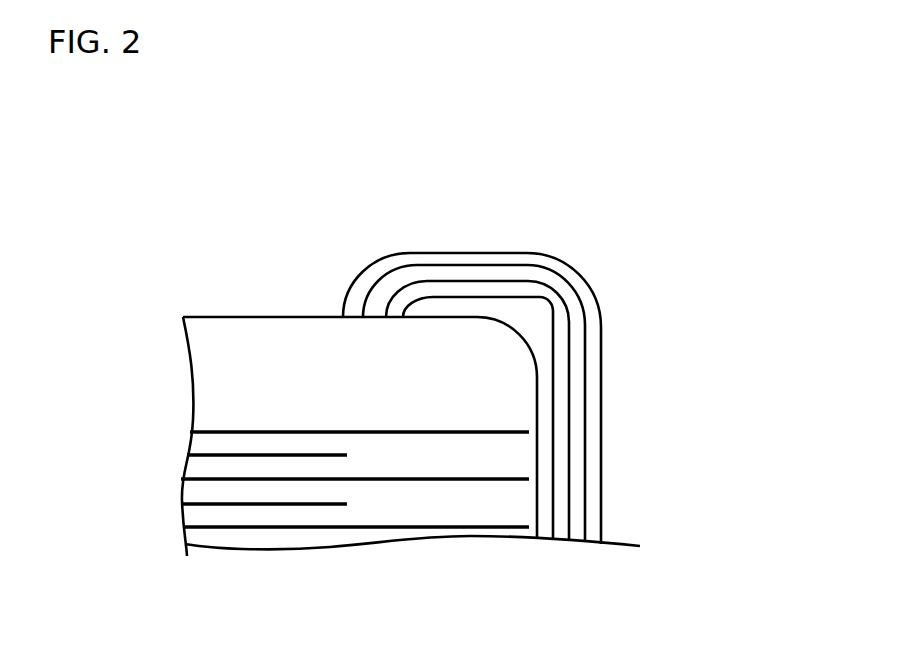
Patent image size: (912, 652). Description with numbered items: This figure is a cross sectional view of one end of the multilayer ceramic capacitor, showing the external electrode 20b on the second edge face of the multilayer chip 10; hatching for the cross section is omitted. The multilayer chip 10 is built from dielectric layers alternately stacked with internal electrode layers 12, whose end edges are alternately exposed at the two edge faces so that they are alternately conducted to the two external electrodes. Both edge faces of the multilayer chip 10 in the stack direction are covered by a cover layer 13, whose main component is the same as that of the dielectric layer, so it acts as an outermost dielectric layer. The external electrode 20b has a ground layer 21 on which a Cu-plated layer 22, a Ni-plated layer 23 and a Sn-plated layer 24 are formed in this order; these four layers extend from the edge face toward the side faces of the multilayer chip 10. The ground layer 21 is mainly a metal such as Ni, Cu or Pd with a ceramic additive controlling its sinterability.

The multilayer chip 10 is at (201, 307).
The internal electrode layers 12 is at (401, 527).
The cover layer 13 is at (257, 353).
The external electrode 20b is at (585, 372).
The ground layer 21 is at (543, 452).
The Cu-plated layer 22 is at (560, 393).
The Ni-plated layer 23 is at (578, 345).
The Sn-plated layer 24 is at (516, 398).